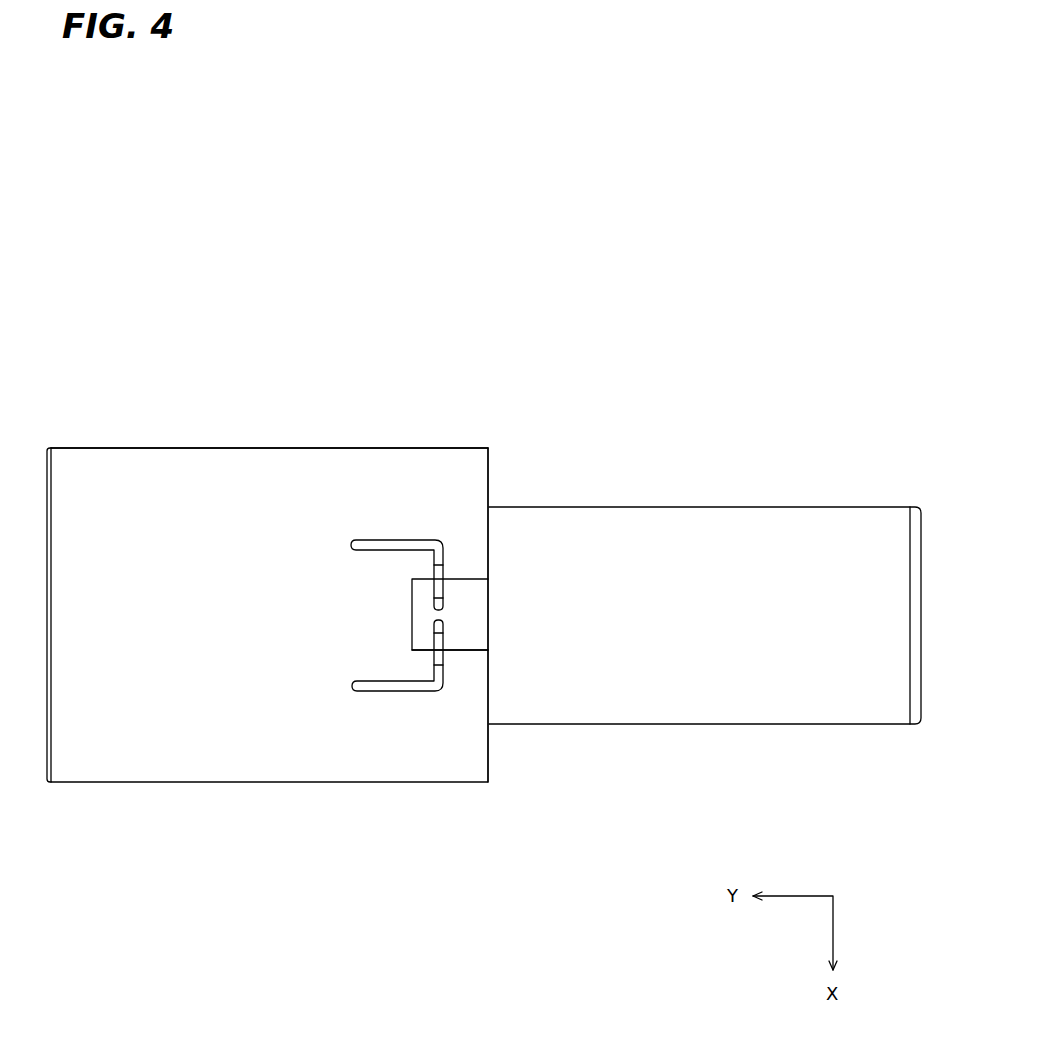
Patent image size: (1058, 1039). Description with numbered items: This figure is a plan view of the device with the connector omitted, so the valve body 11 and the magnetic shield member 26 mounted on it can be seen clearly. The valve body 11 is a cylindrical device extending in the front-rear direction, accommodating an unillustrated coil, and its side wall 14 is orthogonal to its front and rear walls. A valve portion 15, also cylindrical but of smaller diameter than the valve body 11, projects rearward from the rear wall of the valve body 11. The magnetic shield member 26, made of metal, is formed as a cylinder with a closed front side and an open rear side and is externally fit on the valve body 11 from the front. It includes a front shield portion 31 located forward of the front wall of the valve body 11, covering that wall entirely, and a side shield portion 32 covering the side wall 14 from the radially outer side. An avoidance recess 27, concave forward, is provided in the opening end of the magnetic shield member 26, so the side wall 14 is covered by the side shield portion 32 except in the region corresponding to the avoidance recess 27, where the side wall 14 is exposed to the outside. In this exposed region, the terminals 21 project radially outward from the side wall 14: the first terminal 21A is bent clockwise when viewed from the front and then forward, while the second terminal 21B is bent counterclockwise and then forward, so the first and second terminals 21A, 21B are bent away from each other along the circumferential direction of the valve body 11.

The valve body 11 is at (462, 640).
The side wall 14 is at (475, 617).
The valve portion 15 is at (805, 521).
The terminals 21 is at (351, 706).
The first terminal 21A is at (369, 691).
The second terminal 21B is at (365, 546).
The magnetic shield member 26 is at (246, 466).
The avoidance recess 27 is at (476, 588).
The front shield portion 31 is at (47, 507).
The side shield portion 32 is at (141, 458).